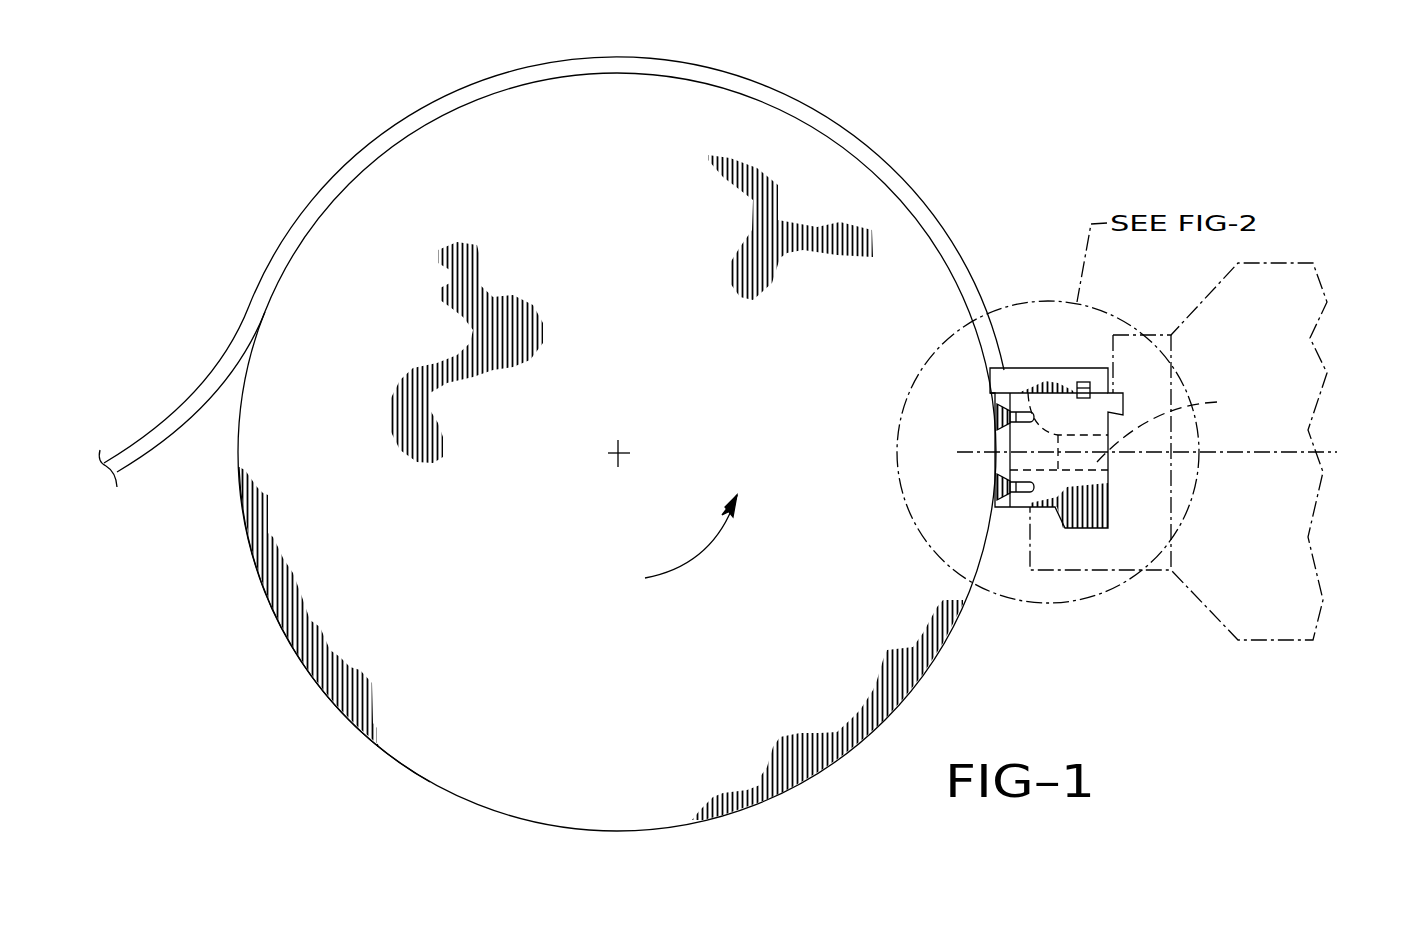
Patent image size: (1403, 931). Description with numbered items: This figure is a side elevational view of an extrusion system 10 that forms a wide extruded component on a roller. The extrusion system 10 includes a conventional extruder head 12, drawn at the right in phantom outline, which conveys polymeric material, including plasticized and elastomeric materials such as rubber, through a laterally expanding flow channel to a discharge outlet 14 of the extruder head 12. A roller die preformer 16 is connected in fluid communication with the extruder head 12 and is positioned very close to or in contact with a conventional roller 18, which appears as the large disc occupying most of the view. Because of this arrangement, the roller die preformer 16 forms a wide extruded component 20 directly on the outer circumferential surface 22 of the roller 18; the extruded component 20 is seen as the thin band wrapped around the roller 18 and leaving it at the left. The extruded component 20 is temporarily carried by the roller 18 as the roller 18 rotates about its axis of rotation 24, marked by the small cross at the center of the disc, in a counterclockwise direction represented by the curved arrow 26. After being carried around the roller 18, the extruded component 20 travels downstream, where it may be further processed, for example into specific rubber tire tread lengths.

The extrusion system 10 is at (1071, 153).
The extruder head 12 is at (1253, 603).
The discharge outlet 14 is at (1173, 426).
The roller die preformer 16 is at (1053, 358).
The roller 18 is at (527, 655).
The extruded component 20 is at (827, 114).
The outer circumferential surface 22 is at (430, 783).
The axis of rotation 24 is at (625, 450).
The arrow 26 is at (695, 553).